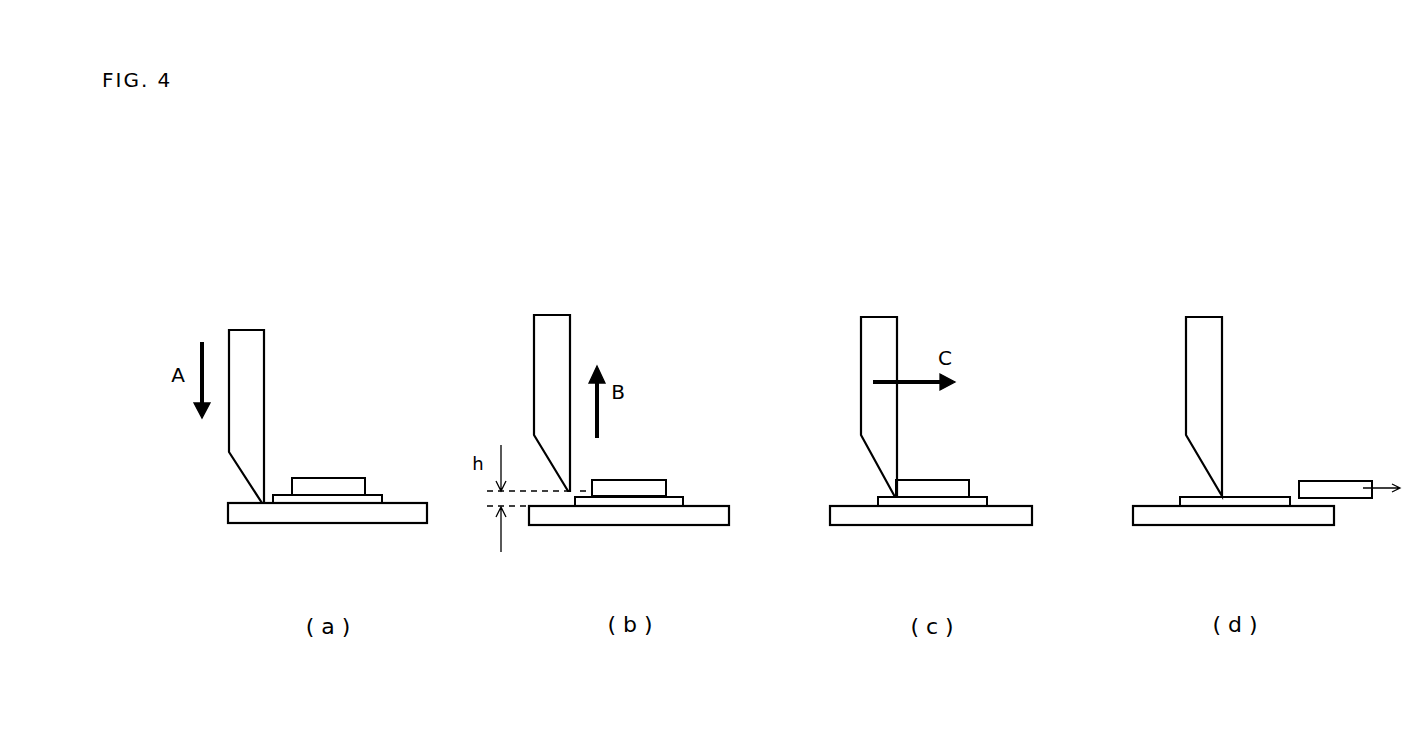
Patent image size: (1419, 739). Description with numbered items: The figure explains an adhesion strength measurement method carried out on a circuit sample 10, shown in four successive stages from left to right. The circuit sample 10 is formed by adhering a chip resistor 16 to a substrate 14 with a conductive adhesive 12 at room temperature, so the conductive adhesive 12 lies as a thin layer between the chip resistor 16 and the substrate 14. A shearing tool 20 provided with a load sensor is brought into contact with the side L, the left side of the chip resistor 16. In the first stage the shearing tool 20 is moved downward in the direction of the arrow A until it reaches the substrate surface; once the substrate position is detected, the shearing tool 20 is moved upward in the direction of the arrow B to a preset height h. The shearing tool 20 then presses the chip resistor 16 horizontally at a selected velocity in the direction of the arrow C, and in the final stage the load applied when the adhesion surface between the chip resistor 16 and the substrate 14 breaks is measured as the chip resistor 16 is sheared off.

The circuit sample 10 is at (372, 538).
The conductive adhesive 12 is at (378, 497).
The substrate 14 is at (260, 518).
The chip resistor 16 is at (330, 482).
The shearing tool 20 is at (250, 330).
The side L is at (278, 490).